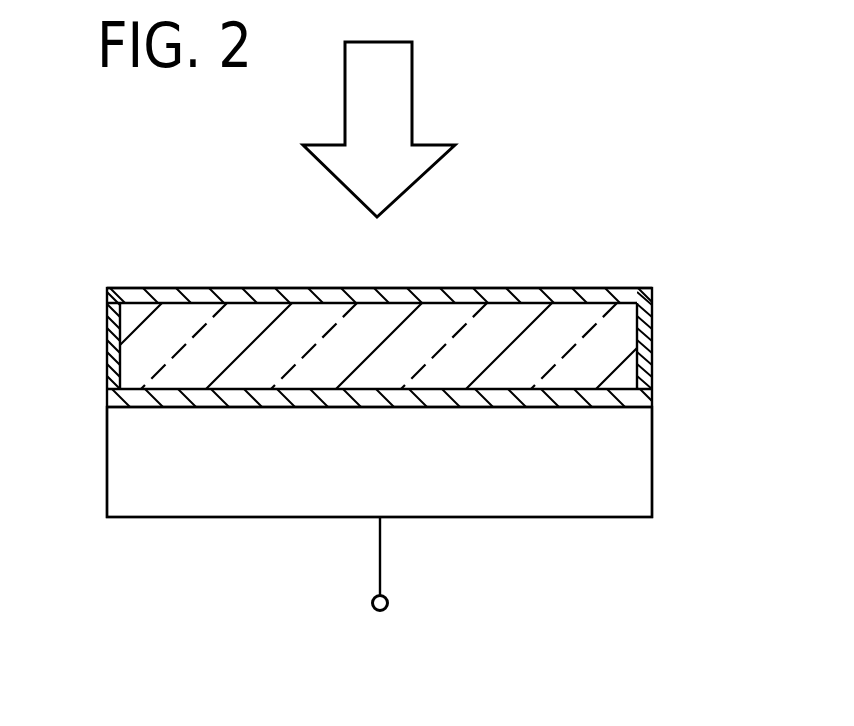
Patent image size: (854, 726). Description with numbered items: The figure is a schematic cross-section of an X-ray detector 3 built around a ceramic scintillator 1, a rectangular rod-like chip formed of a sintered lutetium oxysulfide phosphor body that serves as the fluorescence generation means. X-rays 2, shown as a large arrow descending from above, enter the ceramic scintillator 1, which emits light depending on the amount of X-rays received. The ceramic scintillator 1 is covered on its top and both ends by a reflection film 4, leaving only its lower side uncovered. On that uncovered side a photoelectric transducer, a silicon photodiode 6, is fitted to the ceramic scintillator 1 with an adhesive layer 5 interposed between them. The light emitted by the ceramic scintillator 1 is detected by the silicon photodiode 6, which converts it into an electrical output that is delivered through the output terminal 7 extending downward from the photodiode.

The ceramic scintillator 1 is at (612, 343).
The X-rays 2 is at (412, 90).
The X-ray detector 3 is at (182, 216).
The reflection film 4 is at (108, 310).
The adhesive layer 5 is at (108, 398).
The silicon photodiode 6 is at (188, 517).
The output terminal 7 is at (389, 602).